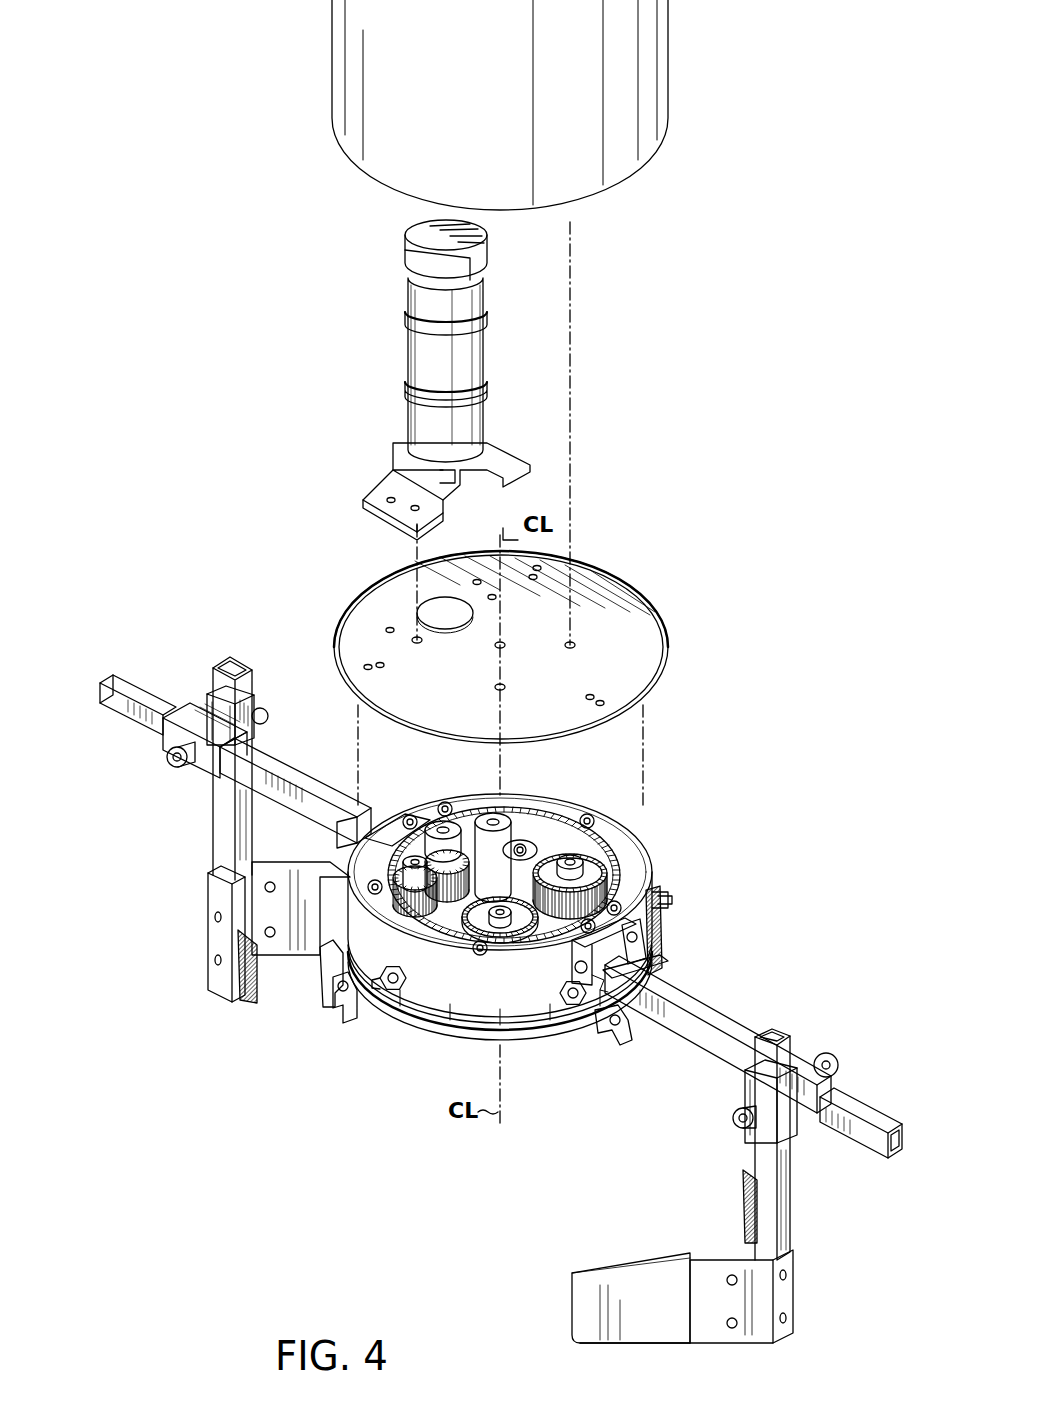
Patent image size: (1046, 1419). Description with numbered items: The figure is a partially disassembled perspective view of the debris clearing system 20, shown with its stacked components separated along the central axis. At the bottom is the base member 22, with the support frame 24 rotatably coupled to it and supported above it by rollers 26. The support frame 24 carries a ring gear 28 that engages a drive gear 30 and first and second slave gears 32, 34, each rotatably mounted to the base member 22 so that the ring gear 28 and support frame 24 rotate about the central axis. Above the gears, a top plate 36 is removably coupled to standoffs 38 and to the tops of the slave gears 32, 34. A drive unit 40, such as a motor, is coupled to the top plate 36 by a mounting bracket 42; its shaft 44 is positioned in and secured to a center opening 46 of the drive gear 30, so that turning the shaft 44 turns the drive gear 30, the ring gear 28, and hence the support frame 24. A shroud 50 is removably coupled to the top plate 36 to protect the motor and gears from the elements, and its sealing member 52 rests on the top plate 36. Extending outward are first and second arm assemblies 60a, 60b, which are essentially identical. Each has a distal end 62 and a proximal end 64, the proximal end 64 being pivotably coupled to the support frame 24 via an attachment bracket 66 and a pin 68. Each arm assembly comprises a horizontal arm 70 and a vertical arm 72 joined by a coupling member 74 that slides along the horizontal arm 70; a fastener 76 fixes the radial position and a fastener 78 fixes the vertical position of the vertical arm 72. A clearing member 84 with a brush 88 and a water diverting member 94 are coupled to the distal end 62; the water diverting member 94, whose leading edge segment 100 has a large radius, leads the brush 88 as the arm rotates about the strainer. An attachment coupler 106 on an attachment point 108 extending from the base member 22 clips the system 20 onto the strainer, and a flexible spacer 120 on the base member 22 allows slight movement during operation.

The system 20 is at (857, 182).
The base member 22 is at (395, 990).
The support frame 24 is at (633, 872).
The rollers 26 is at (533, 848).
The ring gear 28 is at (580, 848).
The drive gear 30 is at (440, 832).
The first slave gear 32 is at (470, 930).
The second slave gear 34 is at (600, 862).
The top plate 36 is at (467, 676).
The standoffs 38 is at (410, 873).
The drive unit 40 is at (412, 345).
The mounting bracket 42 is at (385, 490).
The shaft 44 is at (455, 488).
The center opening 46 is at (440, 828).
The shroud 50 is at (500, 130).
The sealing member 52 is at (506, 645).
The first arm assembly 60a is at (235, 646).
The second arm assembly 60b is at (780, 1026).
The distal end 62 is at (338, 798).
The proximal end 64 is at (205, 992).
The attachment bracket 66 is at (655, 978).
The pin 68 is at (576, 1005).
The horizontal arm 70 is at (131, 692).
The vertical arm 72 is at (212, 833).
The coupling member 74 is at (165, 740).
The fastener 76 is at (174, 762).
The fastener 78 is at (256, 712).
The clearing member 84 is at (207, 922).
The brush 88 is at (257, 1005).
The water diverting member 94 is at (272, 866).
The plate bottom edge 100 is at (571, 1342).
The attachment coupler 106 is at (334, 1022).
The attachment point 108 is at (324, 958).
The flexible spacer 120 is at (443, 1036).